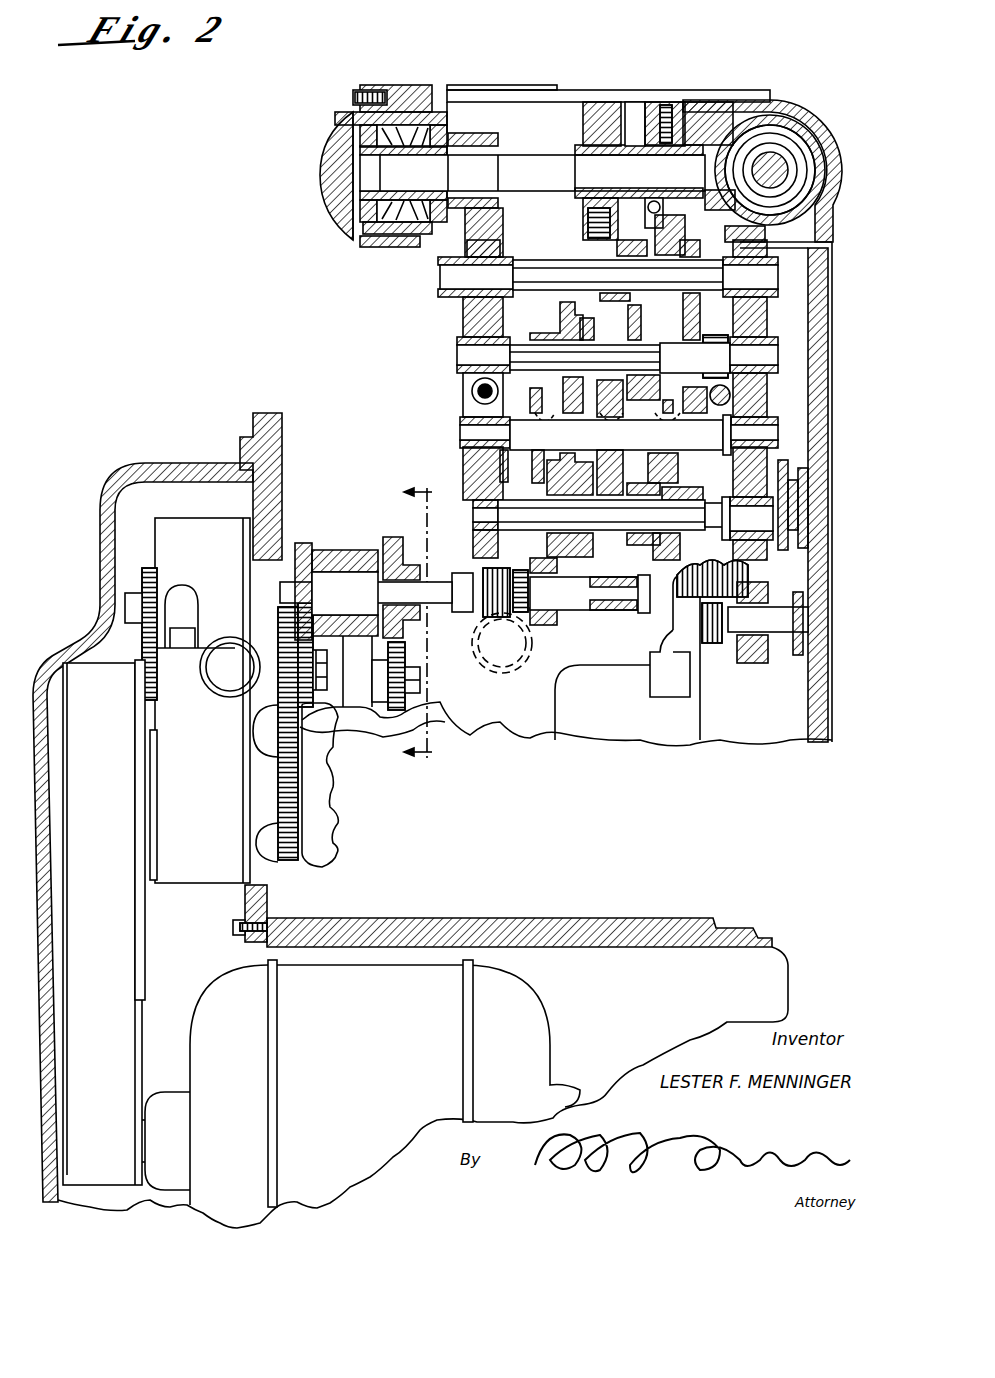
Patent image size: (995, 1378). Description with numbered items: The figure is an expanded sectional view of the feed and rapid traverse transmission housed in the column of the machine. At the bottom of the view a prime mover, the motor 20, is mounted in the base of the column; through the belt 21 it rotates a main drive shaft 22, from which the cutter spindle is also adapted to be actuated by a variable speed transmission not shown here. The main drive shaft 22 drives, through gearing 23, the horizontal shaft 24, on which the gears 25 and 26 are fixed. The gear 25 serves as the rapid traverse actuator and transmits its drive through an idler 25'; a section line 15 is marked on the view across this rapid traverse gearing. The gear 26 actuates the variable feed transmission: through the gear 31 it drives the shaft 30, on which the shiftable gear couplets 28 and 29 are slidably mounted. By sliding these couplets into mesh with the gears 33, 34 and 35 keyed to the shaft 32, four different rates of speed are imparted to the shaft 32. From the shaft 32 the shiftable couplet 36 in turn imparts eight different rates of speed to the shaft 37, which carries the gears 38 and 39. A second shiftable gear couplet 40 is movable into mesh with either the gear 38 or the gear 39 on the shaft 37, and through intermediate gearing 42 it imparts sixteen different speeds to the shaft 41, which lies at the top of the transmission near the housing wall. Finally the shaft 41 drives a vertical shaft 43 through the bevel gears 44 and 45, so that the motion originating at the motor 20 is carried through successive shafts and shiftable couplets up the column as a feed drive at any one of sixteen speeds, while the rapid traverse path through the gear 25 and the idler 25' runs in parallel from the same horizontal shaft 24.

The section line 15 is at (432, 624).
The motor 20 is at (522, 1017).
The belt 21 is at (72, 675).
The main drive shaft 22 is at (148, 840).
The gearing 23 is at (338, 717).
The horizontal shaft 24 is at (437, 598).
The gear 25 is at (357, 607).
The idler 25' is at (433, 680).
The gear 26 is at (520, 612).
The shiftable gear couplet 28 is at (590, 577).
The shiftable gear couplet 29 is at (652, 564).
The shaft 30 is at (722, 553).
The gear 31 is at (478, 565).
The shaft 32 is at (705, 412).
The gear 33 is at (463, 410).
The gear 34 is at (602, 466).
The gear 35 is at (672, 468).
The shiftable couplet 36 is at (562, 305).
The shaft 37 is at (668, 352).
The gear 38 is at (630, 320).
The gear 39 is at (740, 330).
The second shiftable gear couplet 40 is at (800, 233).
The shaft 41 is at (525, 172).
The intermediate gearing 42 is at (590, 240).
The vertical shaft 43 is at (785, 150).
The bevel gear 44 is at (722, 140).
The bevel gear 45 is at (776, 160).